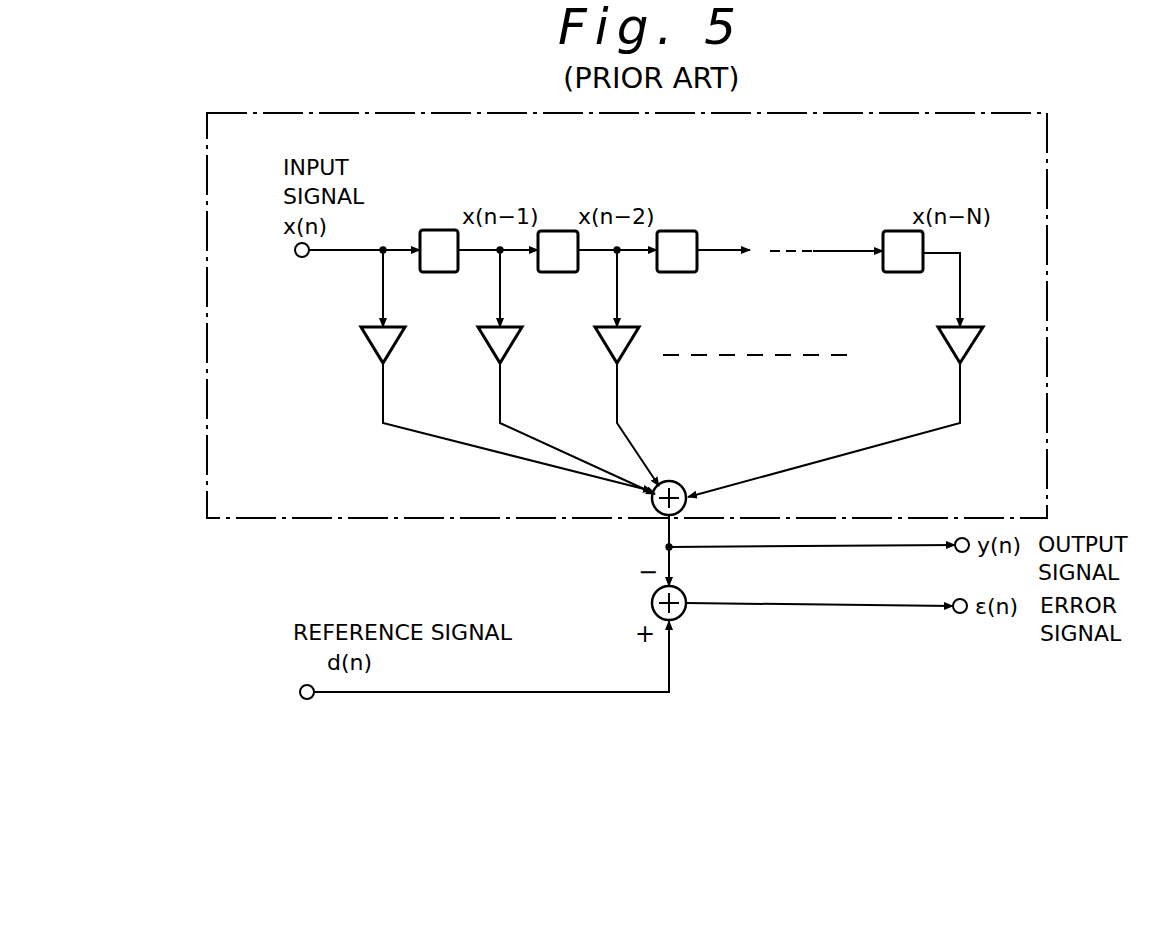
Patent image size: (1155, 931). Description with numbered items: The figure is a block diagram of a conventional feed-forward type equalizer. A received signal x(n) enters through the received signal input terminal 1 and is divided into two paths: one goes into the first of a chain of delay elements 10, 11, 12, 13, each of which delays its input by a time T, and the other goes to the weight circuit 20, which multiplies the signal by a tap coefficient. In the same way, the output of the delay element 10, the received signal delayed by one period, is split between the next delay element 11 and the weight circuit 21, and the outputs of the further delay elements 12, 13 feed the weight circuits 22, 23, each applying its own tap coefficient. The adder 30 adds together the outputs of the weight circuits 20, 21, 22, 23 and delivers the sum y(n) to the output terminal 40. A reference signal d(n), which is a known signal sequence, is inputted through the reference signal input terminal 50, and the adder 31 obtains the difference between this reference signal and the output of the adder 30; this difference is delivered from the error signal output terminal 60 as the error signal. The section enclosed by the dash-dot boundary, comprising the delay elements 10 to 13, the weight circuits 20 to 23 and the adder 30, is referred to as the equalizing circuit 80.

The received signal input terminal 1 is at (297, 257).
The delay element 10 is at (440, 230).
The delay element 11 is at (558, 231).
The delay element 12 is at (683, 231).
The delay element 13 is at (897, 231).
The weight circuit 20 is at (362, 328).
The weight circuit 21 is at (484, 326).
The weight circuit 22 is at (600, 326).
The weight circuit 23 is at (945, 330).
The adder 30 is at (682, 481).
The adder 31 is at (655, 605).
The output terminal 40 is at (957, 552).
The reference signal input terminal 50 is at (309, 699).
The error signal output terminal 60 is at (957, 613).
The equalizing circuit 80 is at (207, 236).